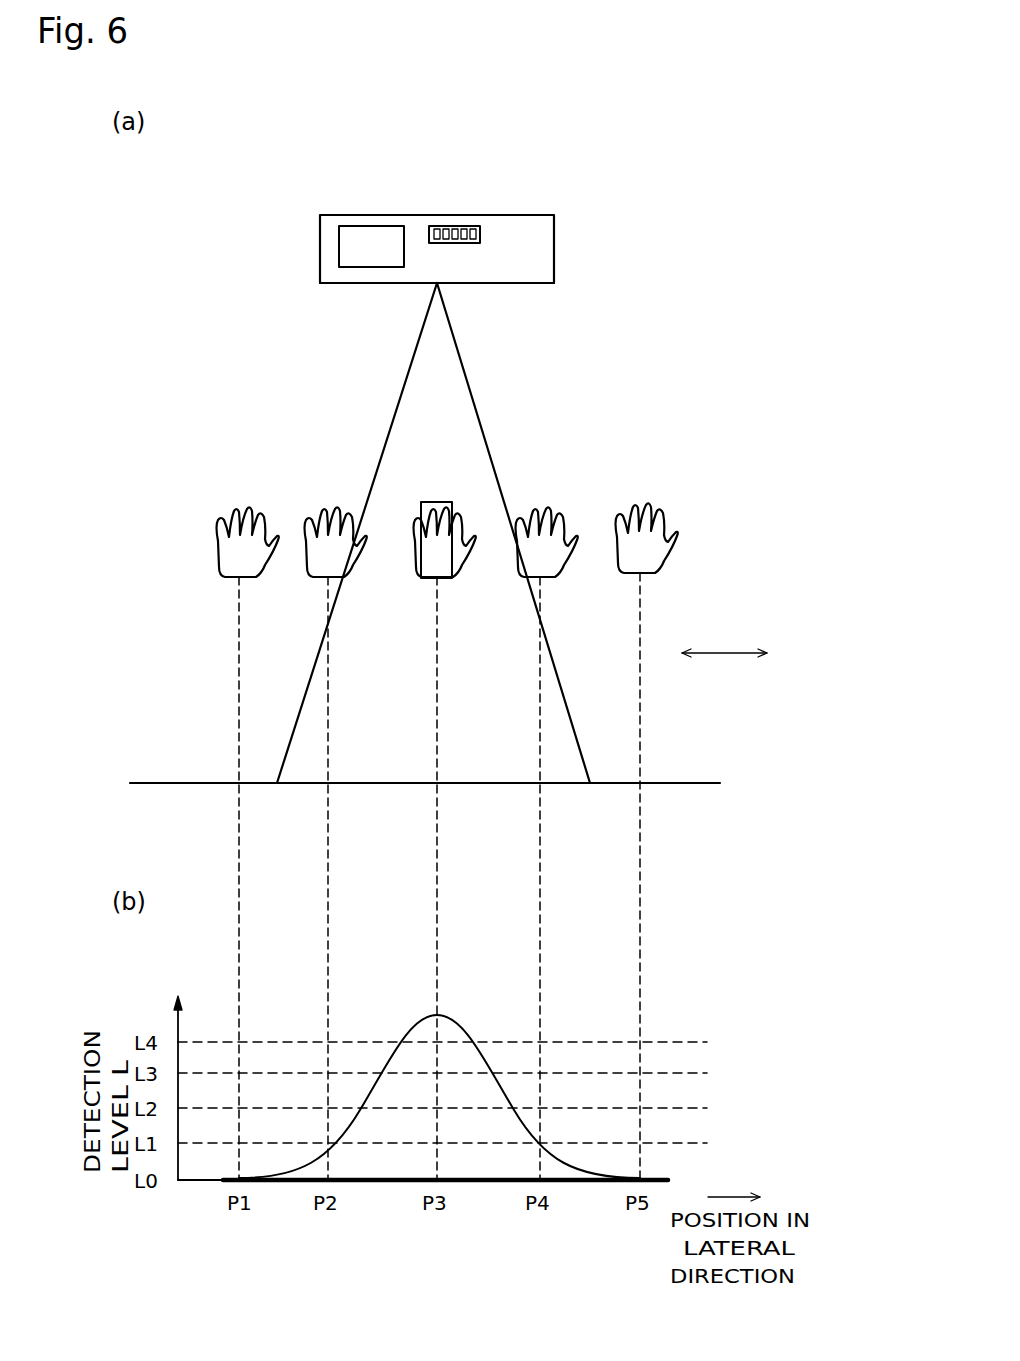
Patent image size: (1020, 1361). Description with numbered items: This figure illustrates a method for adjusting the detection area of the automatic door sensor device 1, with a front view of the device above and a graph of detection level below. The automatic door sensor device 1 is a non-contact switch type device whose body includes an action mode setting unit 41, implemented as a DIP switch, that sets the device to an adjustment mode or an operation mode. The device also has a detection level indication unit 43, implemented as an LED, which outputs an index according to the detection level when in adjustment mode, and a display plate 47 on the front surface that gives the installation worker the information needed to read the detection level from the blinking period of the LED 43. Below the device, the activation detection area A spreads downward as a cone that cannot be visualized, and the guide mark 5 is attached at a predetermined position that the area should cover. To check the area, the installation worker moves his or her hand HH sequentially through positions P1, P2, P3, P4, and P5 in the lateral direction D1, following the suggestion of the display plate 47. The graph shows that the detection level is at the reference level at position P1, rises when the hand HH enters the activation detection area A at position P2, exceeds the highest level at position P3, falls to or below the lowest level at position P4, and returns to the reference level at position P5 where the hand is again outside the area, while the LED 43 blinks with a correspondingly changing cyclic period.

The automatic door sensor device 1 is at (555, 248).
The action mode setting unit 41 is at (441, 226).
The detection level indication unit 43 is at (350, 284).
The display plate 47 is at (353, 249).
The guide mark 5 is at (442, 503).
The activation detection area A is at (453, 408).
The hand HH is at (240, 508).
The lateral direction D1 is at (723, 657).
The position P1 is at (238, 785).
The position P2 is at (327, 785).
The position P3 is at (436, 785).
The position P4 is at (539, 785).
The position P5 is at (639, 785).